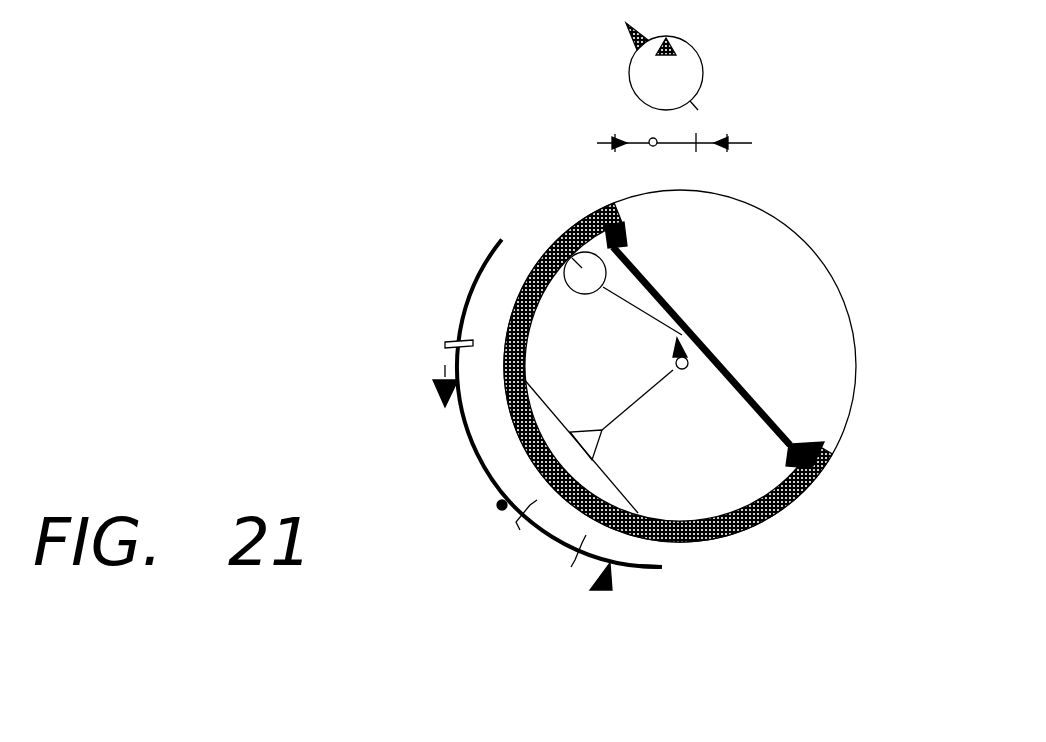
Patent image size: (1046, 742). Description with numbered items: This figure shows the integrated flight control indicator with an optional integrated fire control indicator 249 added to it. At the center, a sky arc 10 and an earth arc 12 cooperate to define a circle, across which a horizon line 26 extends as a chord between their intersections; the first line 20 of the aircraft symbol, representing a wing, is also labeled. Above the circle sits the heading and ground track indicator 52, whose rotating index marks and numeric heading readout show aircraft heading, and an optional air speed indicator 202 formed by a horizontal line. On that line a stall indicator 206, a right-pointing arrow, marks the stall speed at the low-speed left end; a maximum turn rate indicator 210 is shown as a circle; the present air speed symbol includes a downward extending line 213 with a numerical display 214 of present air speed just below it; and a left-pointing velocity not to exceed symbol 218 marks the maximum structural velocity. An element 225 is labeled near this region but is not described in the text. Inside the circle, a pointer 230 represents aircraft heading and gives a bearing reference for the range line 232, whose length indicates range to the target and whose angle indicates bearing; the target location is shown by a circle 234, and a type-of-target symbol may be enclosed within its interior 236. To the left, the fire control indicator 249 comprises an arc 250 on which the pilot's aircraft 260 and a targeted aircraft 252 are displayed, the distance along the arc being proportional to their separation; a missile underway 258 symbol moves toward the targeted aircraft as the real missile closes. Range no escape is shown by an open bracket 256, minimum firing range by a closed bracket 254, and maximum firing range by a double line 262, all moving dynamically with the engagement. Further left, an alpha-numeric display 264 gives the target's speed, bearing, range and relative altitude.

The sky arc 10 is at (812, 243).
The earth arc 12 is at (802, 490).
The first line 20 is at (606, 441).
The horizon line 26 is at (728, 378).
The heading and ground track indicator 52 is at (714, 63).
The air speed indicator 202 is at (588, 148).
The stall indicator 206 is at (615, 141).
The maximum turn rate indicator 210 is at (652, 138).
The downward extending line 213 is at (700, 133).
The numerical display of present air speed 214 is at (682, 162).
The velocity not to exceed symbol 218 is at (730, 143).
The mode label 225 is at (762, 168).
The pointer 230 is at (688, 327).
The range line 232 is at (623, 297).
The circle 234 is at (576, 293).
The interior of the circle 236 is at (573, 259).
The fire control indicator 249 is at (432, 565).
The arc 250 is at (655, 570).
The targeted aircraft 252 is at (605, 593).
The closed bracket 254 is at (572, 568).
The open bracket 256 is at (518, 527).
The missile underway 258 is at (498, 500).
The pilot's aircraft 260 is at (437, 390).
The double line 262 is at (455, 340).
The alpha-numeric display 264 is at (197, 337).